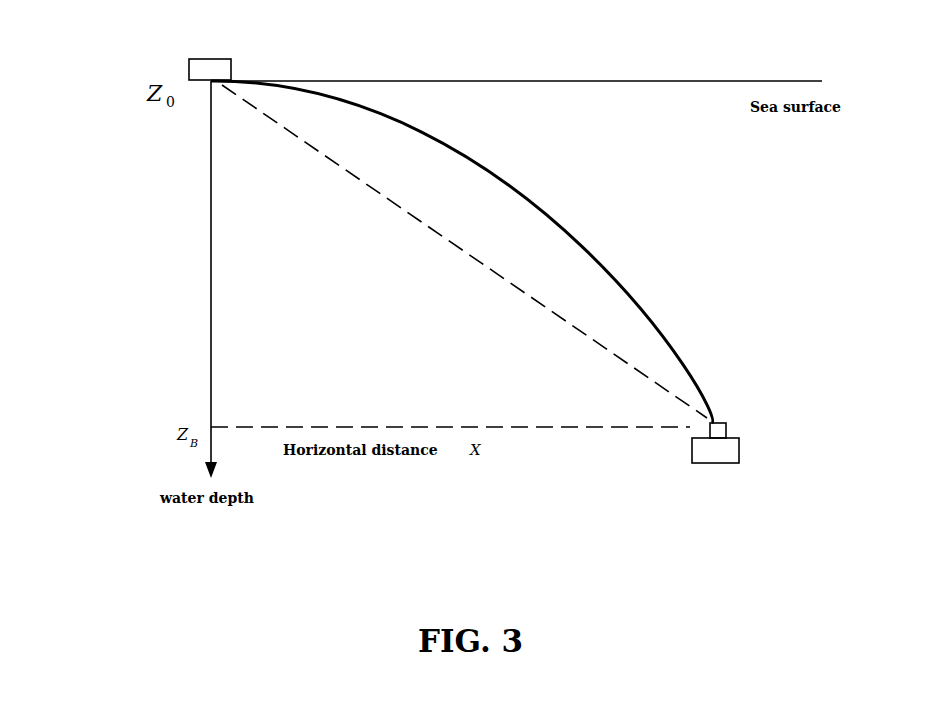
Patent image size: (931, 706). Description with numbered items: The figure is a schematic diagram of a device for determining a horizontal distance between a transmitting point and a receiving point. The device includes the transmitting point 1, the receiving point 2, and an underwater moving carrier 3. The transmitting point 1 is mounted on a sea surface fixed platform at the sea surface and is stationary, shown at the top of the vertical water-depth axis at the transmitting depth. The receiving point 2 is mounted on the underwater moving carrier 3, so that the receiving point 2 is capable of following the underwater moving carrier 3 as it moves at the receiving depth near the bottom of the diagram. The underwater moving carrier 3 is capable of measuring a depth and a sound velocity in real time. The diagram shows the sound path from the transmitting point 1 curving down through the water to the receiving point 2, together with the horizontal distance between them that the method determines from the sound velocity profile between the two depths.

The transmitting point 1 is at (172, 67).
The receiving point 2 is at (729, 404).
The underwater moving carrier 3 is at (746, 450).